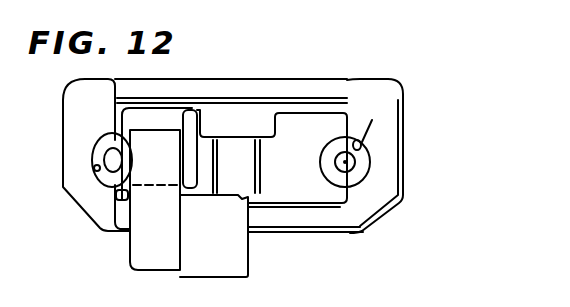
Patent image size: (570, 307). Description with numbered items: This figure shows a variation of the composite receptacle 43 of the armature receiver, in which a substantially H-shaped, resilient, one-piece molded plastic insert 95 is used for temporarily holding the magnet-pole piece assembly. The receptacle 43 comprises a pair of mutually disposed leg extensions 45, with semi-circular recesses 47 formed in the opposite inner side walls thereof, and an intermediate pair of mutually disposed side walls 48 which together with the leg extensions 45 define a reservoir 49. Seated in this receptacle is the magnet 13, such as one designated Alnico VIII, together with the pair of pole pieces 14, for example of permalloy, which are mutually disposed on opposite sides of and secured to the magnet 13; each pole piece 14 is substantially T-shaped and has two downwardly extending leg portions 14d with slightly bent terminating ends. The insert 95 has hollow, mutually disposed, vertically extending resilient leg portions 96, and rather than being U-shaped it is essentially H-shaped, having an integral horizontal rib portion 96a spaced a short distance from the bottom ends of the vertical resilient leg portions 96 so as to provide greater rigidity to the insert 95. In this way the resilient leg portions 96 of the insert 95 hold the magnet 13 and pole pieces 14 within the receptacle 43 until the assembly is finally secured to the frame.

The magnet 13 is at (188, 248).
The pole pieces 14 is at (82, 160).
The downwardly extending leg portions 14d is at (186, 160).
The receptacle 43 is at (415, 90).
The leg extensions 45 is at (93, 207).
The semi-circular recesses 47 is at (100, 170).
The side walls 48 is at (335, 92).
The reservoir 49 is at (201, 118).
The insert 95 is at (289, 190).
The resilient leg portions 96 is at (100, 140).
The horizontal rib portion 96a is at (313, 127).